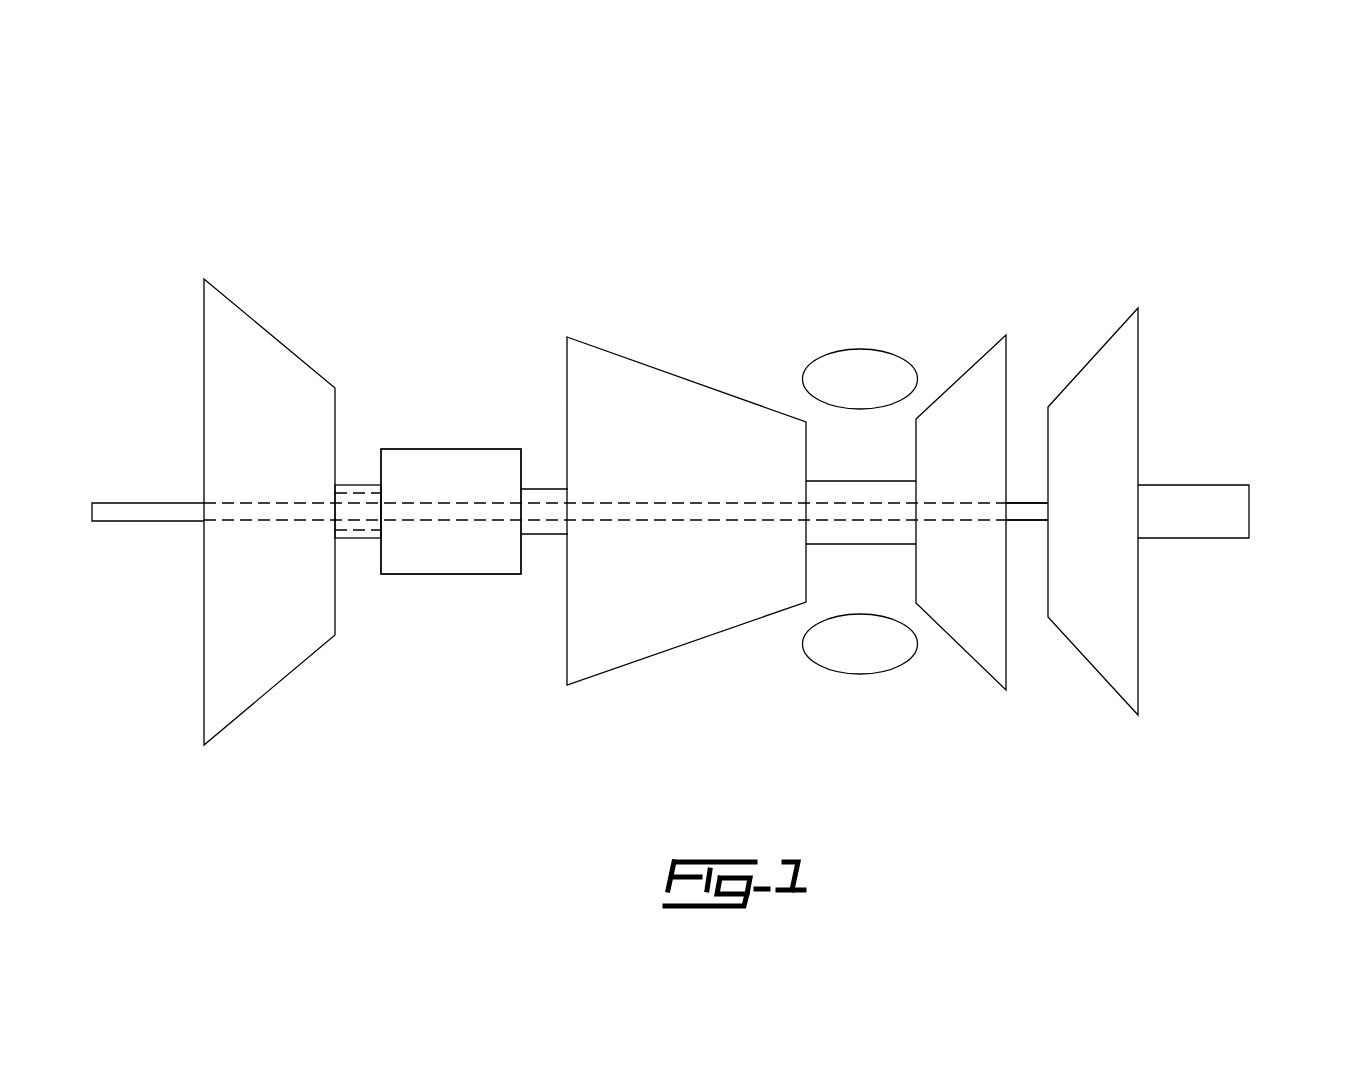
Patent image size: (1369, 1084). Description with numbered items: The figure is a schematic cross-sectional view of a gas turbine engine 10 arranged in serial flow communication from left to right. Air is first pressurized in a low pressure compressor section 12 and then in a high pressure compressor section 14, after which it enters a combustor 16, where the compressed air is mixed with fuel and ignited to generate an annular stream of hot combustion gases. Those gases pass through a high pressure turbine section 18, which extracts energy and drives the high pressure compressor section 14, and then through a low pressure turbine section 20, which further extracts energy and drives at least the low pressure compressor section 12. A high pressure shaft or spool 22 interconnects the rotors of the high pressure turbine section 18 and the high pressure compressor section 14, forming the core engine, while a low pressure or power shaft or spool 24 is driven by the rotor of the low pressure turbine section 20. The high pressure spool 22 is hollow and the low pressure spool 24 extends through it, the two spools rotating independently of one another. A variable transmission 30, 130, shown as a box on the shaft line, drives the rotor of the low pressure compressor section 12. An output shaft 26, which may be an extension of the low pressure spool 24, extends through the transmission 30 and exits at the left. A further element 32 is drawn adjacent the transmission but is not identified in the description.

The gas turbine engine 10 is at (511, 189).
The low pressure compressor section 12 is at (297, 309).
The high pressure compressor section 14 is at (692, 350).
The combustor 16 is at (879, 327).
The high pressure turbine section 18 is at (964, 346).
The low pressure turbine section 20 is at (1167, 328).
The high pressure shaft or spool 22 is at (877, 544).
The low pressure or power shaft or spool 24 is at (1027, 521).
The output shaft 26 is at (134, 513).
The variable transmission 30 is at (450, 420).
The variable transmission 130 is at (451, 511).
The coupling 32 is at (358, 538).